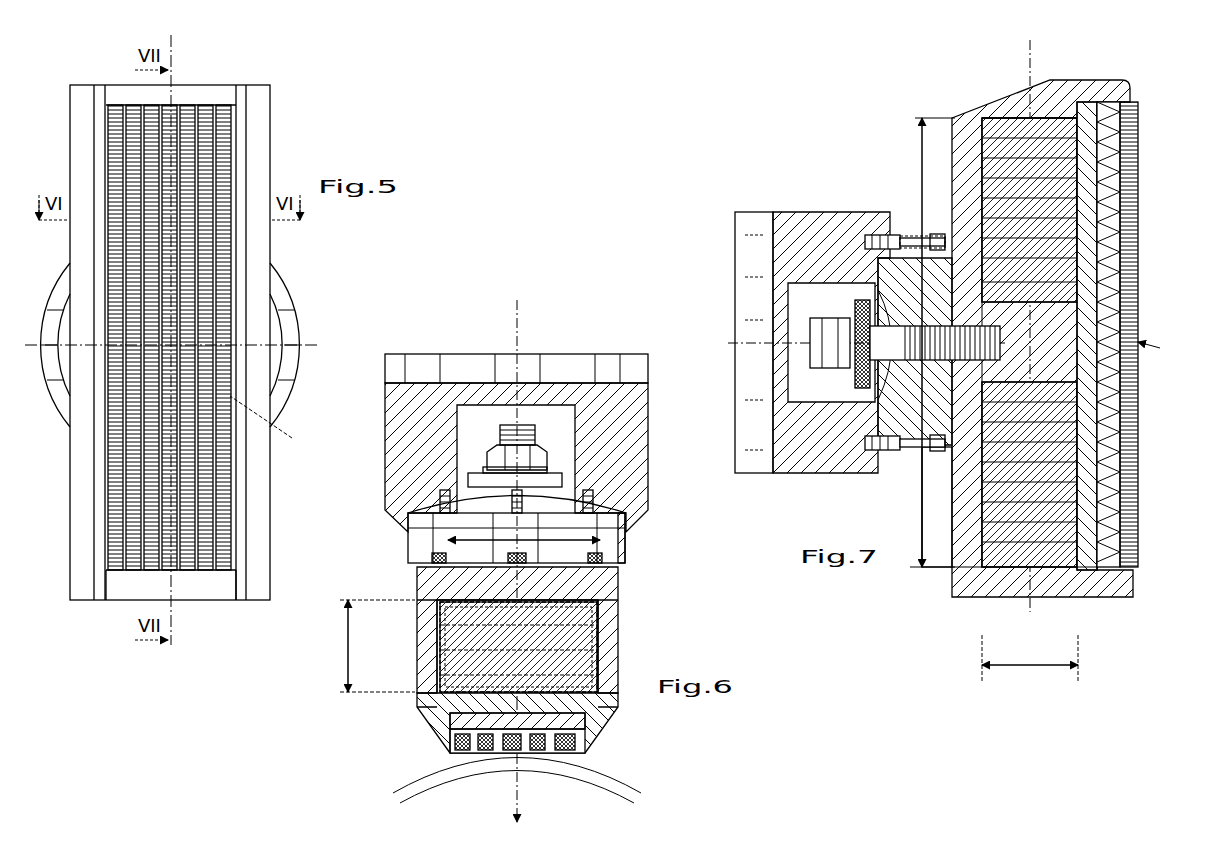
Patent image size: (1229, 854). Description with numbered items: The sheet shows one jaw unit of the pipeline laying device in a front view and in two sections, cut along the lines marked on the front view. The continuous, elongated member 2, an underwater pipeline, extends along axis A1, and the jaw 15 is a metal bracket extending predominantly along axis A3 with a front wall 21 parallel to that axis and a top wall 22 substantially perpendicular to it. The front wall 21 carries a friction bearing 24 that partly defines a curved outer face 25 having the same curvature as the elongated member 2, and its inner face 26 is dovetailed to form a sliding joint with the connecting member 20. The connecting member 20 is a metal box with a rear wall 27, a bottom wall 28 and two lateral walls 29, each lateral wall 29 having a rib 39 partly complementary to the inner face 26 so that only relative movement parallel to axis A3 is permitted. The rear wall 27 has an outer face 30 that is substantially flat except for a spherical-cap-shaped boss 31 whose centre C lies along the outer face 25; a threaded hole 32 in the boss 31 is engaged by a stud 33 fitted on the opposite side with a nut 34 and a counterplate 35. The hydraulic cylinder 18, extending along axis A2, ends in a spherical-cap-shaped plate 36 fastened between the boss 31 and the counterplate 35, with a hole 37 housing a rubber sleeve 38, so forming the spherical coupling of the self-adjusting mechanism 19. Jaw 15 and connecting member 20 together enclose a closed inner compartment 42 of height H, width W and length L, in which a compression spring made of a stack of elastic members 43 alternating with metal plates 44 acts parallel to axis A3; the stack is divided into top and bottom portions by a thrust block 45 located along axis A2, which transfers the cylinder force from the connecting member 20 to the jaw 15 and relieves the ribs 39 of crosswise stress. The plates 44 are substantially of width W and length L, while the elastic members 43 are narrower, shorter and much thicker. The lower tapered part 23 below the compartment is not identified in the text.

In FIG. 6, the continuous, elongated member 2 is at (612, 778).
In FIG. 5, the jaw 15 is at (273, 83).
In FIG. 6, the jaw 15 is at (603, 742).
In FIG. 7, the jaw 15 is at (1134, 84).
In FIG. 5, the hydraulic cylinder 18 is at (286, 312).
In FIG. 6, the hydraulic cylinder 18 is at (402, 436).
In FIG. 7, the hydraulic cylinder 18 is at (822, 226).
In FIG. 6, the self-adjusting mechanism 19 is at (652, 527).
In FIG. 7, the self-adjusting mechanism 19 is at (870, 128).
In FIG. 6, the connecting member 20 is at (626, 642).
In FIG. 7, the connecting member 20 is at (968, 100).
In FIG. 5, the front wall 21 is at (244, 164).
In FIG. 6, the front wall 21 is at (448, 730).
In FIG. 7, the front wall 21 is at (1135, 542).
In FIG. 7, the top wall 22 is at (1040, 110).
In FIG. 5, the lower tapered member 23 is at (193, 97).
In FIG. 6, the lower tapered member 23 is at (602, 728).
In FIG. 5, the friction bearing 24 is at (112, 250).
In FIG. 6, the friction bearing 24 is at (482, 752).
In FIG. 7, the friction bearing 24 is at (1138, 392).
In FIG. 5, the curved outer face 25 is at (108, 562).
In FIG. 6, the curved outer face 25 is at (568, 752).
In FIG. 7, the curved outer face 25 is at (1137, 320).
In FIG. 6, the inner face 26 is at (455, 662).
In FIG. 7, the inner face 26 is at (1042, 592).
In FIG. 6, the rear wall 27 is at (598, 592).
In FIG. 7, the rear wall 27 is at (968, 578).
In FIG. 7, the bottom wall 28 is at (992, 590).
In FIG. 6, the lateral wall 29 is at (600, 668).
In FIG. 7, the outer face 30 is at (950, 575).
In FIG. 7, the boss 31 is at (968, 215).
In FIG. 7, the threaded hole 32 is at (946, 362).
In FIG. 6, the stud 33 is at (510, 430).
In FIG. 7, the stud 33 is at (905, 238).
In FIG. 6, the nut 34 is at (541, 456).
In FIG. 7, the nut 34 is at (790, 362).
In FIG. 6, the counterplate 35 is at (470, 484).
In FIG. 7, the counterplate 35 is at (835, 275).
In FIG. 6, the spherical-cap-shaped plate 36 is at (606, 546).
In FIG. 7, the spherical-cap-shaped plate 36 is at (896, 452).
In FIG. 7, the hole 37 is at (872, 236).
In FIG. 7, the sleeve 38 is at (872, 452).
In FIG. 6, the rib 39 is at (600, 708).
In FIG. 6, the inner compartment 42 is at (582, 626).
In FIG. 7, the inner compartment 42 is at (1010, 104).
In FIG. 6, the elastic member 43 is at (438, 620).
In FIG. 7, the elastic member 43 is at (1060, 116).
In FIG. 6, the plate 44 is at (438, 641).
In FIG. 7, the plate 44 is at (1138, 152).
In FIG. 7, the thrust block 45 is at (1138, 293).
In FIG. 6, the axis A1 is at (521, 816).
In FIG. 6, the axis A2 is at (527, 335).
In FIG. 7, the axis A2 is at (760, 342).
In FIG. 5, the axis A3 is at (173, 100).
In FIG. 6, the axis A3 is at (510, 752).
In FIG. 7, the axis A3 is at (1028, 76).
In FIG. 5, the centre C is at (268, 426).
In FIG. 6, the centre C is at (535, 752).
In FIG. 7, the centre C is at (1155, 356).
In FIG. 7, the height H is at (918, 180).
In FIG. 6, the length L is at (370, 646).
In FIG. 7, the length L is at (1032, 660).
In FIG. 6, the width W is at (538, 530).